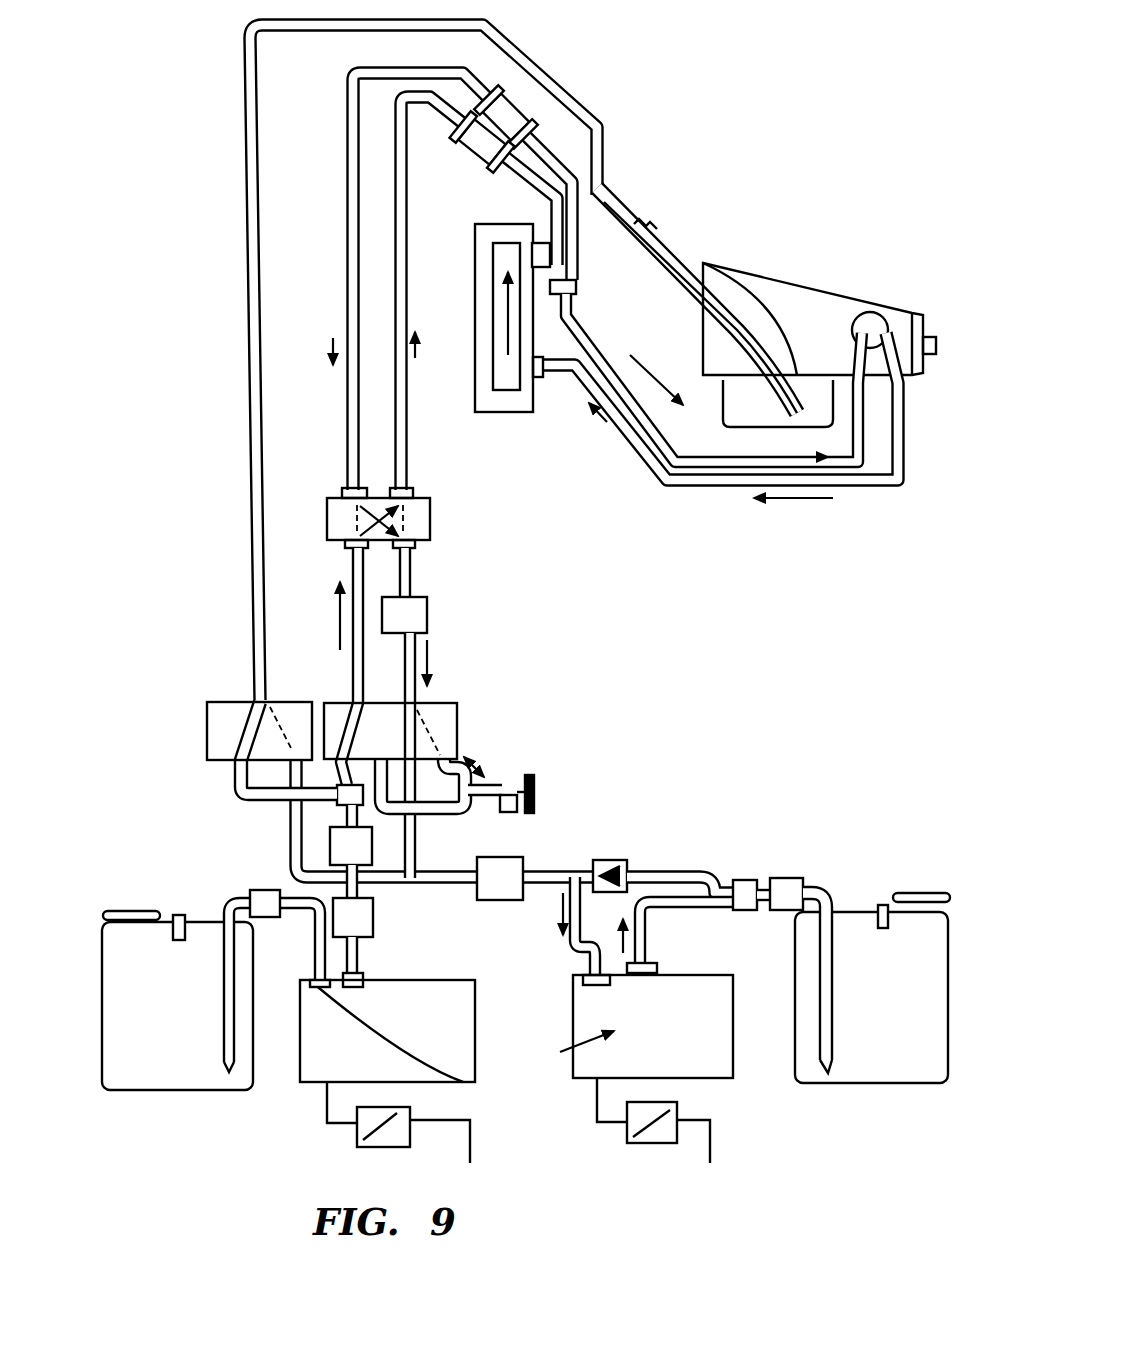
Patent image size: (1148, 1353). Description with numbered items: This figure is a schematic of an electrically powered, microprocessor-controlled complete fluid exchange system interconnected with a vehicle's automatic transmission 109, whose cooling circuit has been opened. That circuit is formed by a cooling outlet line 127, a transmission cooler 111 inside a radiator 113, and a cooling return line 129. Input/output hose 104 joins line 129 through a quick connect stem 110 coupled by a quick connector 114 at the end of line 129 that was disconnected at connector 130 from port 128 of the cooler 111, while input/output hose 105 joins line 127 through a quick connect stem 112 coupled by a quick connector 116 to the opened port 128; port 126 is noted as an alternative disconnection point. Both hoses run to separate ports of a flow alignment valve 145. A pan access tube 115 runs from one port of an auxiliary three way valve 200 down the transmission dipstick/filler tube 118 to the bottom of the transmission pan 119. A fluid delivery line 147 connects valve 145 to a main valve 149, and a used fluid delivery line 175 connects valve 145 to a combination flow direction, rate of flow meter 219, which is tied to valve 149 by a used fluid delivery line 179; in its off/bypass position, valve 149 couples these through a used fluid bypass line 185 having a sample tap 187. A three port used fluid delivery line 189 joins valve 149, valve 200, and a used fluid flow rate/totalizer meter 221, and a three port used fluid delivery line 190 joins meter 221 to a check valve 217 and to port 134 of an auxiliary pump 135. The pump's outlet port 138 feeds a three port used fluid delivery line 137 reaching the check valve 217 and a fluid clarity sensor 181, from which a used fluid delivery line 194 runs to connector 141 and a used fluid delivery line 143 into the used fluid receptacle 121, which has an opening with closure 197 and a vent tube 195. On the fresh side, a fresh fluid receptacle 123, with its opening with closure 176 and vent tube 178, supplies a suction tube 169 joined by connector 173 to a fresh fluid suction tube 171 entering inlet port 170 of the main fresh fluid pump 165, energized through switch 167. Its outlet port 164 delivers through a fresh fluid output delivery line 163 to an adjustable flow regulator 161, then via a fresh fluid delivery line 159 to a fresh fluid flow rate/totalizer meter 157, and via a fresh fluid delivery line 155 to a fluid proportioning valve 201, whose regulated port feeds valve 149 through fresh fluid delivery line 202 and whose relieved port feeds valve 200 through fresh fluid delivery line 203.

The input/output hose 104 is at (479, 293).
The input/output hose 105 is at (347, 190).
The transmission 109 is at (826, 302).
The quick connect stem 110 is at (585, 140).
The transmission cooler 111 is at (500, 413).
The quick connect stem 112 is at (561, 166).
The radiator 113 is at (465, 347).
The quick connector 114 is at (462, 161).
The pan access tube 115 is at (518, 44).
The quick connector 116 is at (545, 88).
The transmission dipstick/filler tube 118 is at (672, 238).
The transmission pan 119 is at (700, 393).
The used fluid receptacle 121 is at (880, 1060).
The fresh fluid receptacle 123 is at (166, 1076).
The port 126 is at (543, 380).
The cooling outlet line 127 is at (720, 487).
The port 128 is at (506, 223).
The cooling return line 129 is at (680, 455).
The connector 130 is at (577, 289).
The port 134 is at (583, 981).
The auxiliary pump 135 is at (562, 1053).
The three port used fluid delivery line 137 is at (670, 871).
The outlet port 138 is at (651, 963).
The connector 141 is at (788, 878).
The used fluid delivery line 143 is at (823, 893).
The flow alignment valve 145 is at (431, 520).
The fluid delivery line 147 is at (352, 562).
The main valve 149 is at (457, 712).
The fresh fluid delivery line 155 is at (345, 822).
The fresh fluid flow rate/totalizer meter 157 is at (340, 842).
The fresh fluid delivery line 159 is at (374, 912).
The adjustable flow regulator 161 is at (358, 944).
The fresh fluid output delivery line 163 is at (361, 974).
The outlet port 164 is at (463, 1083).
The main fresh fluid pump 165 is at (436, 1031).
The switch 167 is at (358, 1141).
The suction tube 169 is at (228, 900).
The inlet port 170 is at (315, 990).
The fresh fluid suction tube 171 is at (313, 925).
The connector 173 is at (262, 890).
The used fluid delivery line 175 is at (413, 562).
The opening with closure 176 is at (133, 910).
The vent tube 178 is at (178, 915).
The used fluid delivery line 179 is at (434, 652).
The fluid clarity sensor 181 is at (745, 880).
The used fluid bypass line 185 is at (468, 813).
The sample tap 187 is at (532, 776).
The three port used fluid delivery line 189 is at (418, 871).
The three port used fluid delivery line 190 is at (536, 872).
The used fluid delivery line 194 is at (758, 910).
The vent tube 195 is at (883, 905).
The opening with closure 197 is at (921, 893).
The auxiliary three way valve 200 is at (207, 735).
The fluid proportioning valve 201 is at (345, 780).
The fresh fluid delivery line 202 is at (340, 780).
The fresh fluid delivery line 203 is at (235, 790).
The check valve 217 is at (613, 860).
The combination flow direction, rate of flow meter 219 is at (428, 612).
The used fluid flow rate/totalizer meter 221 is at (493, 901).